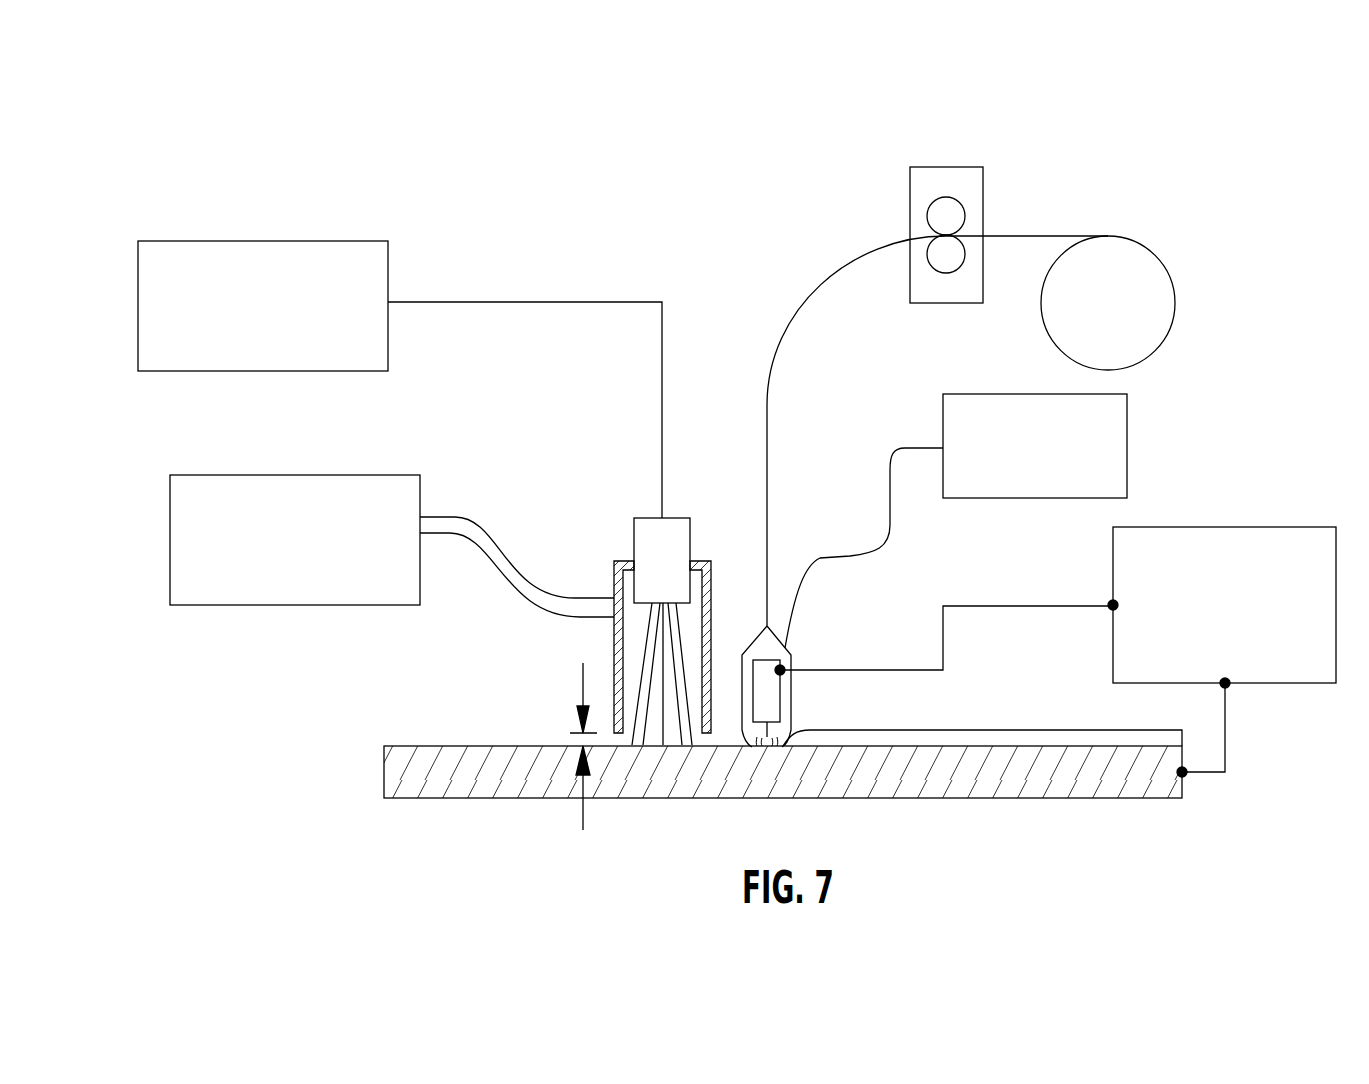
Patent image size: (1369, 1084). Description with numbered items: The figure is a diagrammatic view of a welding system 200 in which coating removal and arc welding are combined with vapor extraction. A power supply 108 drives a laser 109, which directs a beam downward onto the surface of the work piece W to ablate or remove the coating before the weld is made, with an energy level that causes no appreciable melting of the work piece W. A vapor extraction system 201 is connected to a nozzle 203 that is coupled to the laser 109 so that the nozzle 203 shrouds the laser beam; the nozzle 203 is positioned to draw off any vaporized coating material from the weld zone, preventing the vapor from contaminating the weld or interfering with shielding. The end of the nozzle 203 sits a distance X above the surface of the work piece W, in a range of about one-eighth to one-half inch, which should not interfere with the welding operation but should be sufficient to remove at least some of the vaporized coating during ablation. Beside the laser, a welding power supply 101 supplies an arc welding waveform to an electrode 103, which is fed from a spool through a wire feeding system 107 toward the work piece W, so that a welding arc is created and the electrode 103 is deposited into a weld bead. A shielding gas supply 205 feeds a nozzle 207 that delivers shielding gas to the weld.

The welding system 200 is at (1198, 178).
The power supply 108 is at (220, 241).
The laser 109 is at (643, 518).
The nozzle 203 is at (614, 640).
The vapor extraction system 201 is at (201, 605).
The wire feeding system 107 is at (957, 200).
The electrode 103 is at (815, 292).
The shielding gas supply 205 is at (1128, 460).
The welding power supply 101 is at (1243, 527).
The nozzle 207 is at (788, 650).
The work piece W is at (1083, 798).
The distance X is at (583, 762).